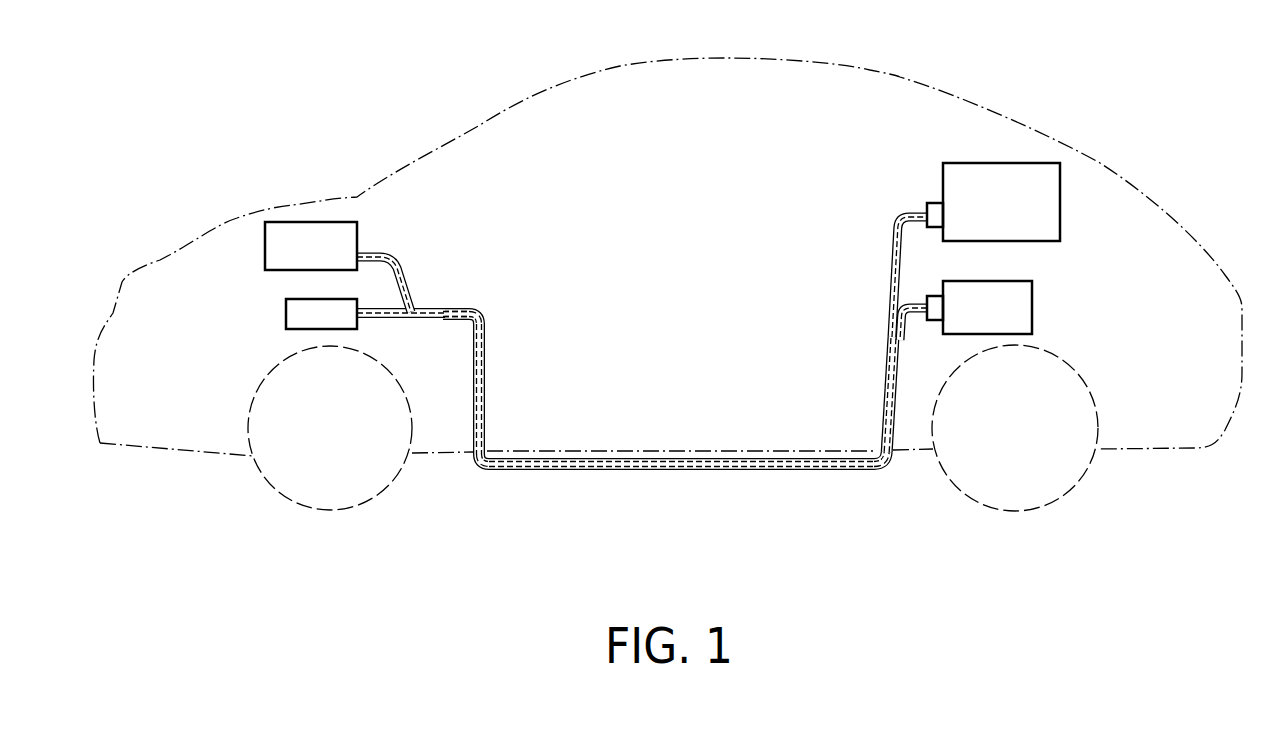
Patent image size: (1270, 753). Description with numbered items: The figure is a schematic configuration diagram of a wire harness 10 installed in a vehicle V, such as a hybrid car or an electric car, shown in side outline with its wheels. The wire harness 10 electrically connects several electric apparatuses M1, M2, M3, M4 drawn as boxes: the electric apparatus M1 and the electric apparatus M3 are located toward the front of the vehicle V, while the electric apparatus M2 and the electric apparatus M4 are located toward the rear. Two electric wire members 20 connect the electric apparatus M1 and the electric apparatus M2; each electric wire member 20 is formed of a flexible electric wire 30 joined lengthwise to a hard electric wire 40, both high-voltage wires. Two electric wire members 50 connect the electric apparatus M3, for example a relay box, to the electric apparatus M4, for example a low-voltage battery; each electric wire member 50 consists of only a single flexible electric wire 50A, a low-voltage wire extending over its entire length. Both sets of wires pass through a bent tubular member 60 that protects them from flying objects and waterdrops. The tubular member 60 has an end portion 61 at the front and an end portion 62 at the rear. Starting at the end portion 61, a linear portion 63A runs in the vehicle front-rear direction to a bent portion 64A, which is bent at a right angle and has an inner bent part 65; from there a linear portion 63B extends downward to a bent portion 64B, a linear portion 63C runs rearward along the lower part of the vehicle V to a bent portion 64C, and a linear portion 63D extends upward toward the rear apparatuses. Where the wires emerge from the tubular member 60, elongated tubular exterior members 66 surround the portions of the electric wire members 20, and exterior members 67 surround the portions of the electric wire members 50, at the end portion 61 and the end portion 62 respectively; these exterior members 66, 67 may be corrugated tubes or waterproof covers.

The vehicle V is at (975, 99).
The wire harness 10 is at (881, 184).
The electric wire member 20 is at (400, 252).
The flexible electric wire 30 is at (901, 260).
The hard electric wire 40 is at (485, 388).
The electric wire member 50 is at (570, 502).
The flexible electric wire 50A is at (533, 471).
The tubular member 60 is at (627, 450).
The end portion 61 is at (443, 322).
The end portion 62 is at (888, 338).
The linear portion 63A is at (456, 308).
The linear portion 63B is at (485, 349).
The linear portion 63C is at (713, 471).
The linear portion 63D is at (881, 404).
The bent portion 64A is at (480, 309).
The bent portion 64B is at (477, 465).
The bent portion 64C is at (887, 472).
The inner bent part 65 is at (470, 322).
The exterior member 66 is at (373, 252).
The exterior member 67 is at (370, 319).
The electric apparatus M1 is at (265, 246).
The electric apparatus M2 is at (1062, 200).
The electric apparatus M3 is at (286, 310).
The electric apparatus M4 is at (1035, 305).